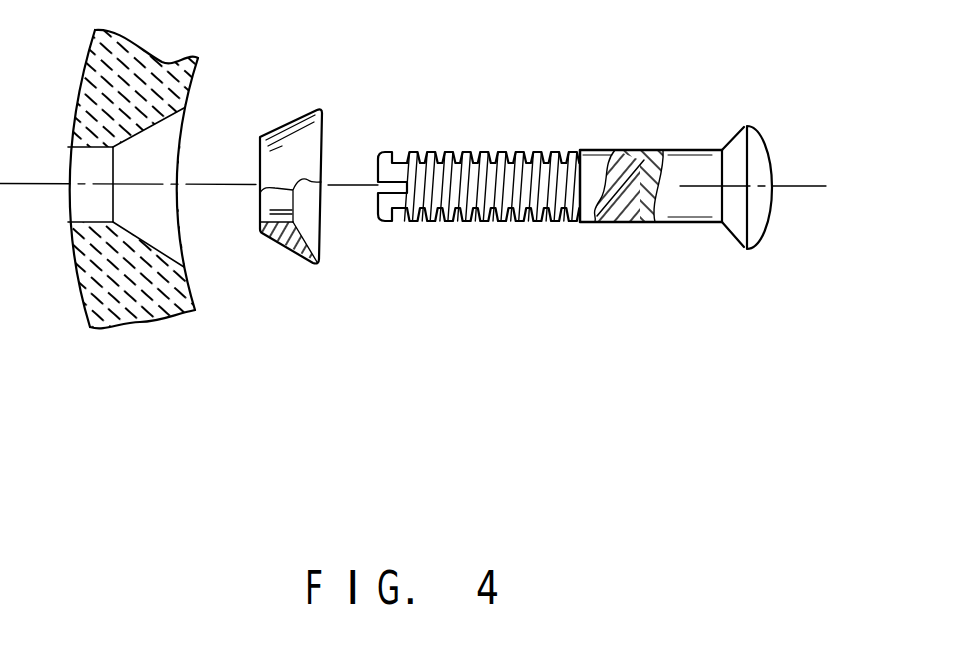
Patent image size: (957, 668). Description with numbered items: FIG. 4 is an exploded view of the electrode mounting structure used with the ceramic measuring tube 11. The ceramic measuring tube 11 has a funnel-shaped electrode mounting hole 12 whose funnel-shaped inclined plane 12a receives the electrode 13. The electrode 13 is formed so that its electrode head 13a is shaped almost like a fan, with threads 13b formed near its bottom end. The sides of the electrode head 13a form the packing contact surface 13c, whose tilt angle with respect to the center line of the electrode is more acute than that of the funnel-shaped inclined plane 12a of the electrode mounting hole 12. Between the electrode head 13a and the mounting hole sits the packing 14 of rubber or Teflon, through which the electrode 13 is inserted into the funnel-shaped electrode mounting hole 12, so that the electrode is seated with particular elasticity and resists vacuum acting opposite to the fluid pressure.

The ceramic measuring tube 11 is at (147, 313).
The electrode mounting hole 12 is at (177, 242).
The funnel-shaped inclined plane 12a is at (118, 143).
The electrode 13 is at (607, 215).
The electrode head 13a is at (771, 212).
The threads 13b is at (415, 225).
The packing contact surface 13c is at (730, 230).
The washer 14 is at (287, 253).